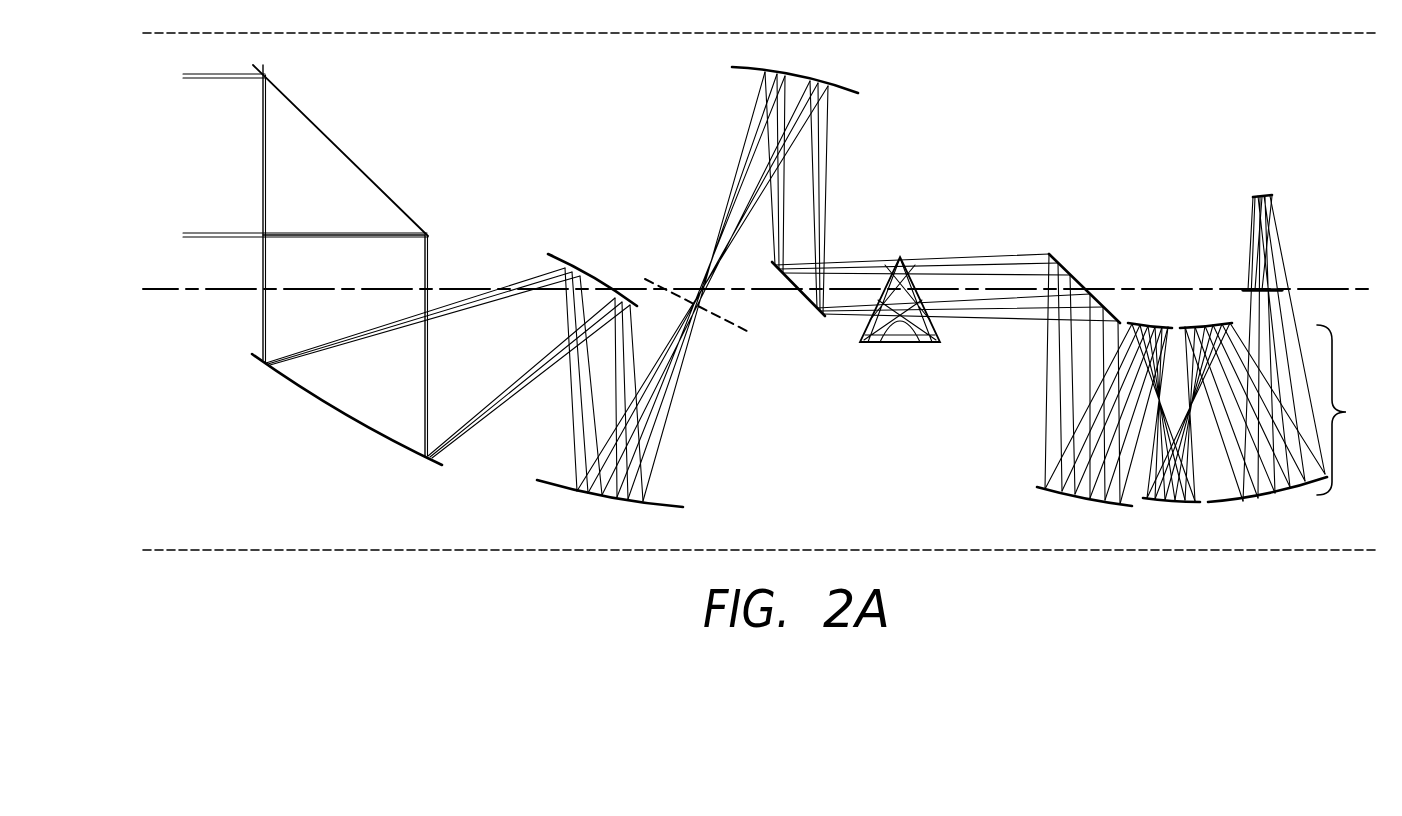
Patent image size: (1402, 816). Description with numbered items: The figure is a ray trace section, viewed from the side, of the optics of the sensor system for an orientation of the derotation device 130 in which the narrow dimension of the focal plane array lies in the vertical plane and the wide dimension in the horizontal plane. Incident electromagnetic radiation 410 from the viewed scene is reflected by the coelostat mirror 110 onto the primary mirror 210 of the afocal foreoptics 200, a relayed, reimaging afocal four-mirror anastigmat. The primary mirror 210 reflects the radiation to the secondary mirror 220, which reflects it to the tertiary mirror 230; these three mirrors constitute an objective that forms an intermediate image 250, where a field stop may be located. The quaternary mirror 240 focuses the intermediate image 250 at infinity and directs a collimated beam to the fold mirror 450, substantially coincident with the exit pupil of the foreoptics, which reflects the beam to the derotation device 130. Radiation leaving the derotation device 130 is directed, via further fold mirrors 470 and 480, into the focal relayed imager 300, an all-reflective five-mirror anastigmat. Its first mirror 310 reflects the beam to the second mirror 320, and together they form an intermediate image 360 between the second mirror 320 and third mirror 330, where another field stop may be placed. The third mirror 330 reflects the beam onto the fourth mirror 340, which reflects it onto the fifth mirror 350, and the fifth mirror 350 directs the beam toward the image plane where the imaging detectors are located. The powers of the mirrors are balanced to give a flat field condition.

The coelostat mirror 110 is at (358, 167).
The derotation device 130 is at (917, 346).
The afocal foreoptics 200 is at (521, 172).
The primary mirror 210 is at (345, 418).
The secondary mirror 220 is at (551, 252).
The tertiary mirror 230 is at (565, 490).
The quaternary mirror 240 is at (848, 88).
The intermediate image 250 is at (728, 320).
The focal relayed imager 300 is at (1351, 410).
The first mirror 310 is at (1100, 505).
The second mirror 320 is at (1157, 327).
The third mirror 330 is at (1192, 505).
The fourth mirror 340 is at (1207, 327).
The fifth mirror 350 is at (1300, 492).
The intermediate image 360 is at (1268, 288).
The incident electromagnetic radiation 410 is at (207, 77).
The fold mirror 450 is at (804, 302).
The fold mirror 470 is at (1057, 260).
The fold mirror 480 is at (1262, 196).